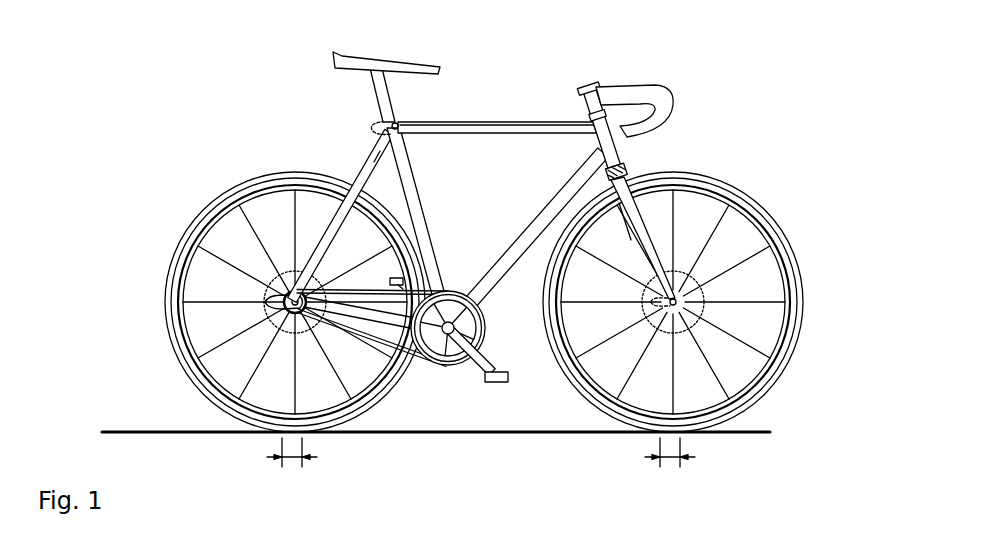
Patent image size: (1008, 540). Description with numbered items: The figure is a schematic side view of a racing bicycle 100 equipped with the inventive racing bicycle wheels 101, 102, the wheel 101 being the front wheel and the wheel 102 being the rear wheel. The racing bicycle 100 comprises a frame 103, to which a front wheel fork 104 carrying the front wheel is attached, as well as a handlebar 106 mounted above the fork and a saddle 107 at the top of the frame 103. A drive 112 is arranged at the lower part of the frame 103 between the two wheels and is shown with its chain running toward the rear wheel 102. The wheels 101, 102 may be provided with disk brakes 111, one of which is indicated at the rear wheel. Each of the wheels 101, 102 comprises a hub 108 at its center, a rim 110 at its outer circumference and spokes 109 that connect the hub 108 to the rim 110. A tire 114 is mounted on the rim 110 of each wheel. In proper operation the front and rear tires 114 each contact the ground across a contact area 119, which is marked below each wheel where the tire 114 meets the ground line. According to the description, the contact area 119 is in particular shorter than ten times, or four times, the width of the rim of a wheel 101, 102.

The racing bicycle 100 is at (205, 90).
The racing bicycle wheel 101 is at (779, 208).
The racing bicycle wheel 102 is at (188, 213).
The frame 103 is at (502, 128).
The front wheel fork 104 is at (633, 214).
The handlebar 106 is at (618, 85).
The saddle 107 is at (370, 60).
The hub 108 is at (703, 296).
The spokes 109 is at (730, 386).
The rim 110 is at (780, 342).
The disk brake 111 is at (266, 303).
The drive 112 is at (465, 273).
The tire 114 is at (804, 300).
The contact area 119 is at (292, 458).